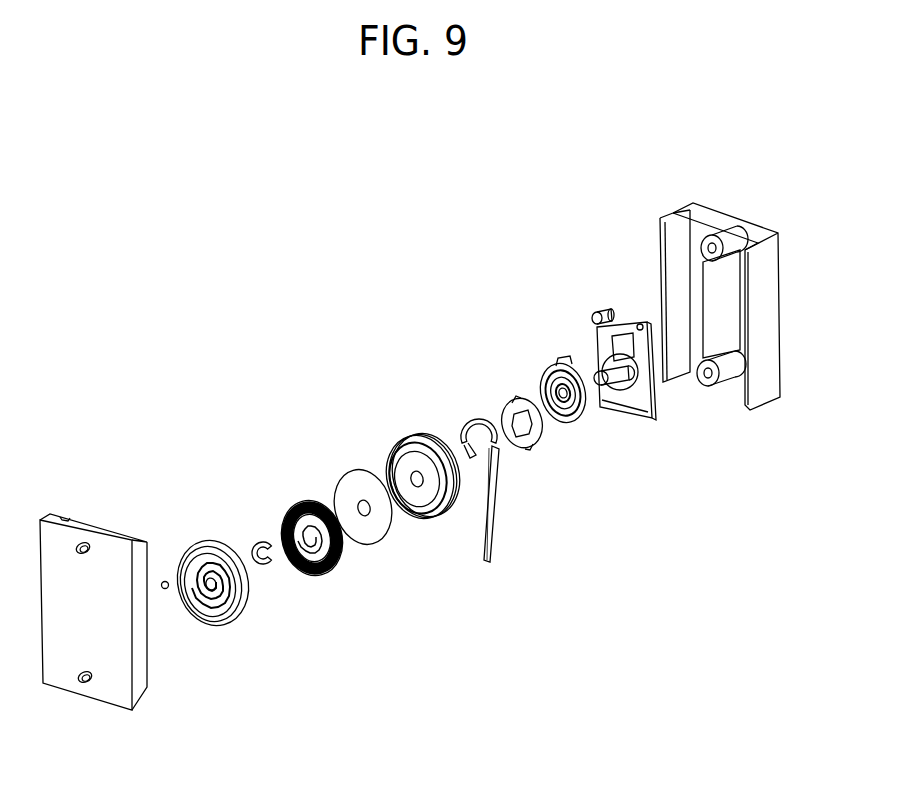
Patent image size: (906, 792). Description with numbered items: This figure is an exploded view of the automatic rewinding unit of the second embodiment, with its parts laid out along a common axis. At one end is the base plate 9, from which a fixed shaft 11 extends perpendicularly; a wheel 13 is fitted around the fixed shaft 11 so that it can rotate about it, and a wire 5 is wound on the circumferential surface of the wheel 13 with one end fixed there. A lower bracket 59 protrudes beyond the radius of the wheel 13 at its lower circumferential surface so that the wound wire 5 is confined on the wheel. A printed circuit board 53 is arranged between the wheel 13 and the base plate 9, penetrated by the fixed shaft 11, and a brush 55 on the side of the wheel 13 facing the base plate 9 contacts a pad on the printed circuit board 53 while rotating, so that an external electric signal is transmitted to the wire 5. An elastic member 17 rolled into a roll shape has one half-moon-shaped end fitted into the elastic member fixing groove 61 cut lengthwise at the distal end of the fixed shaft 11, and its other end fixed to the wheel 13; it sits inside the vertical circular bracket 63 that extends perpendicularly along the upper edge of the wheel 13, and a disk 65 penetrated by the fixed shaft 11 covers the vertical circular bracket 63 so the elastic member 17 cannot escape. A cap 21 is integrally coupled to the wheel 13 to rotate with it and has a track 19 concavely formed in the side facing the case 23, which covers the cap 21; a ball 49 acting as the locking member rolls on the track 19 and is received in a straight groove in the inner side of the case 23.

The wire 5 is at (475, 416).
The base plate 9 is at (618, 310).
The fixed shaft 11 is at (614, 371).
The wheel 13 is at (409, 487).
The elastic member 17 is at (308, 497).
The track 19 is at (213, 584).
The cap 21 is at (218, 538).
The case 23 is at (103, 563).
The ball 49 is at (165, 581).
The printed circuit board 53 is at (558, 352).
The brush 55 is at (530, 448).
The lower bracket 59 is at (456, 512).
The elastic member fixing groove 61 is at (622, 382).
The vertical circular bracket 63 is at (384, 452).
The disk 65 is at (370, 533).